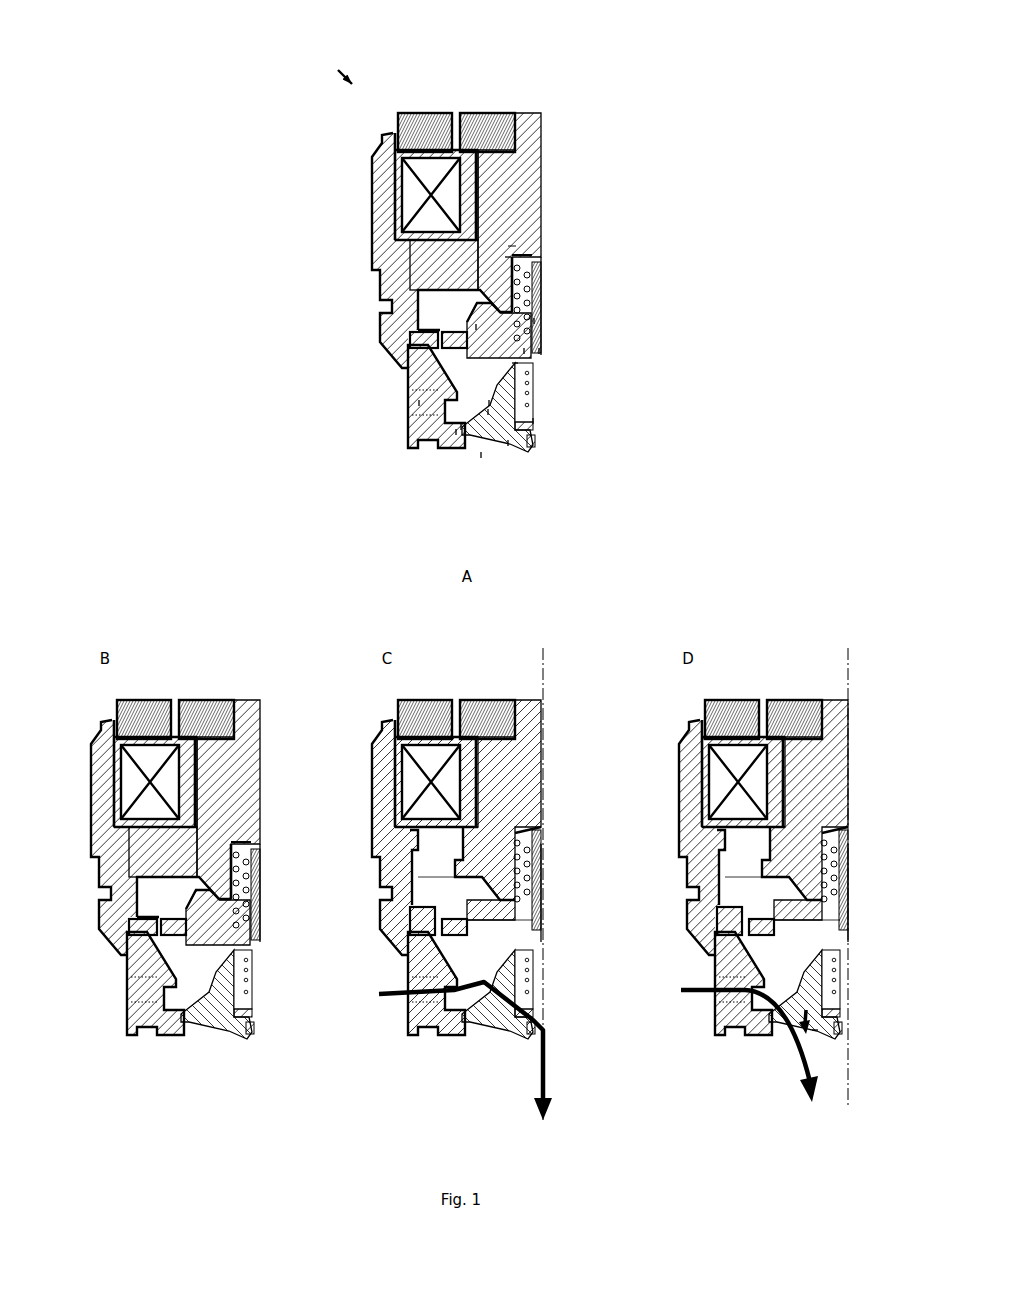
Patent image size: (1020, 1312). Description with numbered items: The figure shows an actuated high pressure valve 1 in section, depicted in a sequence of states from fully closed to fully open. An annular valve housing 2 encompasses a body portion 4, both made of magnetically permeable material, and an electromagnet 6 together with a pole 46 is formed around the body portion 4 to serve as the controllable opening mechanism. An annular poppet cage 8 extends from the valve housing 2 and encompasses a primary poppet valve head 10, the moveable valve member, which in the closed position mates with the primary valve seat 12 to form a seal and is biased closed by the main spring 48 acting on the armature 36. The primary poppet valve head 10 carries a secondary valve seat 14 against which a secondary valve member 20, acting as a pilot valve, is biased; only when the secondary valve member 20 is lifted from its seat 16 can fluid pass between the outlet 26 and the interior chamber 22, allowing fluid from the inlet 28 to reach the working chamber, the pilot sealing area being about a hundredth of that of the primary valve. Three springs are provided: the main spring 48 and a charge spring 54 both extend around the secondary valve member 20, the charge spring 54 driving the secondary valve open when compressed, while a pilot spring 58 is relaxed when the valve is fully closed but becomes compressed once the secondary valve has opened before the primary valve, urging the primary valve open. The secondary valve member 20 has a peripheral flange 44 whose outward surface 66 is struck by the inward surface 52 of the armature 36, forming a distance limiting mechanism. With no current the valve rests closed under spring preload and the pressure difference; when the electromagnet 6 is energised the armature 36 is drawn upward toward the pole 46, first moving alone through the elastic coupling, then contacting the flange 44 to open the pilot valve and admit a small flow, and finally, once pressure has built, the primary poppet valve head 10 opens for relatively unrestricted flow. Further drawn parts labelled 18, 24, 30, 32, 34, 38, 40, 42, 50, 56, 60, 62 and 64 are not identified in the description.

In FIG. 1A, the actuated high pressure valve 1 is at (336, 67).
In FIG. 1A, the annular valve housing 2 is at (380, 141).
In FIG. 1A, the body portion 4 is at (501, 170).
In FIG. 1A, the electromagnet 6 is at (400, 181).
In FIG. 1A, the annular poppet cage 8 is at (401, 445).
In FIG. 1A, the primary poppet valve head 10 is at (472, 430).
In FIG. 1A, the primary valve seat 12 is at (489, 403).
In FIG. 1A, the secondary valve seat 14 is at (543, 454).
In FIG. 1A, the seat 16 is at (508, 443).
In FIG. 1A, the valve seat 18 is at (534, 433).
In FIG. 1A, the secondary valve member 20 is at (481, 455).
In FIG. 1A, the interior chamber 22 is at (476, 327).
In FIG. 1A, the inlet channel 24 is at (456, 432).
In FIG. 1A, the outlet 26 is at (488, 412).
In FIG. 1A, the inlet 28 is at (461, 427).
In FIG. 1A, the plunger 30 is at (423, 268).
In FIG. 1A, the stop element 32 is at (405, 325).
In FIG. 1A, the valve member 34 is at (524, 351).
In FIG. 1A, the armature 36 is at (477, 321).
In FIG. 1A, the spacer 38 is at (432, 339).
In FIG. 1A, the valve closure 40 is at (539, 351).
In FIG. 1A, the sleeve 42 is at (544, 369).
In FIG. 1A, the peripheral flange 44 is at (543, 276).
In FIG. 1A, the pole 46 is at (505, 256).
In FIG. 1A, the main spring 48 is at (521, 258).
In FIG. 1A, the stop 50 is at (511, 244).
In FIG. 1A, the inward surface 52 is at (511, 343).
In FIG. 1A, the charge spring 54 is at (529, 294).
In FIG. 1A, the outer wall 56 is at (533, 264).
In FIG. 1A, the pilot spring 58 is at (534, 384).
In FIG. 1A, the gap 60 is at (533, 421).
In FIG. 1A, the flow path 62 is at (512, 366).
In FIG. 1D, the flow path 62 is at (815, 1033).
In FIG. 1A, the passage 64 is at (419, 403).
In FIG. 1A, the outward surface 66 is at (534, 321).